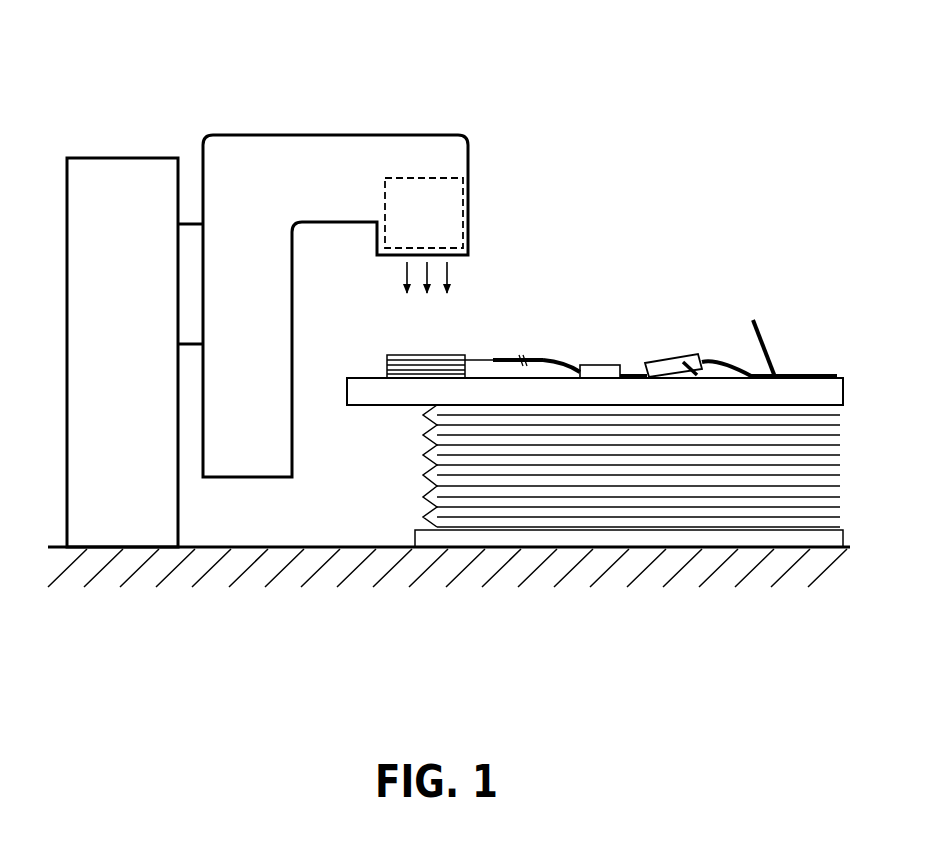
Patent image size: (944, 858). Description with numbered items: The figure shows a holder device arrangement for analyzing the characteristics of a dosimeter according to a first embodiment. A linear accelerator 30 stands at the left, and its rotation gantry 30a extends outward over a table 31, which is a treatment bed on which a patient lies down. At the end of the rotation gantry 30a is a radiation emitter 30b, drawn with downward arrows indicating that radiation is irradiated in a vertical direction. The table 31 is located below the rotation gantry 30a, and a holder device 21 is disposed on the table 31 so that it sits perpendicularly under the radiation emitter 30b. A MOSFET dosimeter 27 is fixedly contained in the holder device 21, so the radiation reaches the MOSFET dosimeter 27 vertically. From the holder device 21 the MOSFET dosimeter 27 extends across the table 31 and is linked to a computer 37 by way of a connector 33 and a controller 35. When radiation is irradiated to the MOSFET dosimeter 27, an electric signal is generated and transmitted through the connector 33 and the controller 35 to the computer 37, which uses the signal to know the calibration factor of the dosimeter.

The linear accelerator 30 is at (309, 295).
The rotation gantry 30a is at (368, 147).
The radiation emitter 30b is at (465, 215).
The holder device 21 is at (452, 352).
The MOSFET dosimeter 27 is at (483, 358).
The table 31 is at (387, 395).
The connector 33 is at (600, 371).
The controller 35 is at (673, 360).
The computer 37 is at (763, 333).